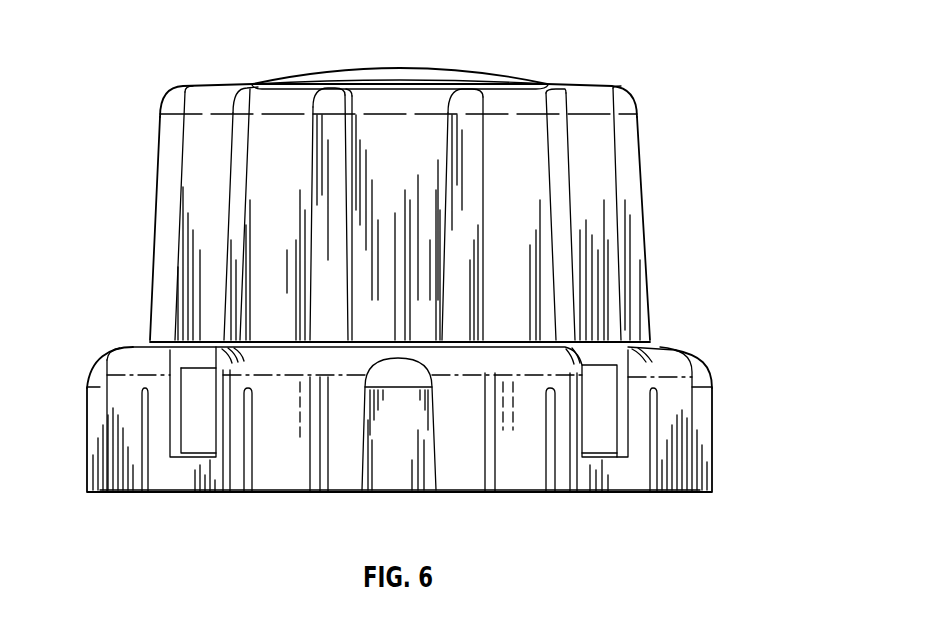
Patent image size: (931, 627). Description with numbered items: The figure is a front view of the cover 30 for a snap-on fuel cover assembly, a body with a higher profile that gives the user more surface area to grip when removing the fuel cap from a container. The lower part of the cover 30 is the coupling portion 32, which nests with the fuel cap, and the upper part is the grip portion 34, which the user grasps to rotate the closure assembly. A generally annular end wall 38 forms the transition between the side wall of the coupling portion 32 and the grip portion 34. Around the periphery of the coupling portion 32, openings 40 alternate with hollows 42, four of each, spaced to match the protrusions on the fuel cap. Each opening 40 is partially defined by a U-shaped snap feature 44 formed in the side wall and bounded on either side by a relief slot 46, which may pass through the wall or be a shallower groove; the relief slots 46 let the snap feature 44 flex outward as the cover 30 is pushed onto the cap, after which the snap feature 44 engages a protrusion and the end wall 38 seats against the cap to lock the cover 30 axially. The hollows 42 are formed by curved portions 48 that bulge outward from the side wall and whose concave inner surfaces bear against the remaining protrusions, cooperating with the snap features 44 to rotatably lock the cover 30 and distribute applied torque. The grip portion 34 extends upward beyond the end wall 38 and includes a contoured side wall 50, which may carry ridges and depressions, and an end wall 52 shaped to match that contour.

The cover 30 is at (656, 55).
The coupling portion 32 is at (770, 347).
The grip portion 34 is at (770, 70).
The end wall 38 is at (663, 344).
The openings 40 is at (608, 398).
The hollows 42 is at (419, 507).
The snap feature 44 is at (182, 483).
The relief slots 46 is at (143, 492).
The curved portion 48 is at (98, 413).
The contoured side wall 50 is at (620, 174).
The end wall 52 is at (452, 78).